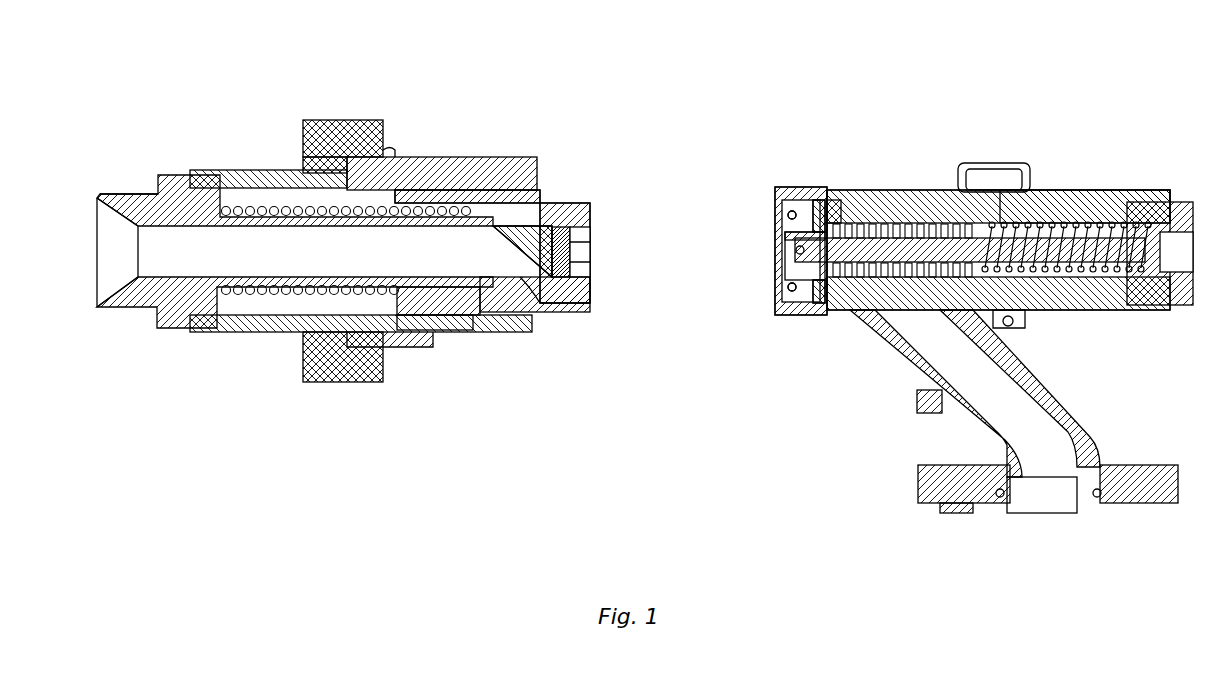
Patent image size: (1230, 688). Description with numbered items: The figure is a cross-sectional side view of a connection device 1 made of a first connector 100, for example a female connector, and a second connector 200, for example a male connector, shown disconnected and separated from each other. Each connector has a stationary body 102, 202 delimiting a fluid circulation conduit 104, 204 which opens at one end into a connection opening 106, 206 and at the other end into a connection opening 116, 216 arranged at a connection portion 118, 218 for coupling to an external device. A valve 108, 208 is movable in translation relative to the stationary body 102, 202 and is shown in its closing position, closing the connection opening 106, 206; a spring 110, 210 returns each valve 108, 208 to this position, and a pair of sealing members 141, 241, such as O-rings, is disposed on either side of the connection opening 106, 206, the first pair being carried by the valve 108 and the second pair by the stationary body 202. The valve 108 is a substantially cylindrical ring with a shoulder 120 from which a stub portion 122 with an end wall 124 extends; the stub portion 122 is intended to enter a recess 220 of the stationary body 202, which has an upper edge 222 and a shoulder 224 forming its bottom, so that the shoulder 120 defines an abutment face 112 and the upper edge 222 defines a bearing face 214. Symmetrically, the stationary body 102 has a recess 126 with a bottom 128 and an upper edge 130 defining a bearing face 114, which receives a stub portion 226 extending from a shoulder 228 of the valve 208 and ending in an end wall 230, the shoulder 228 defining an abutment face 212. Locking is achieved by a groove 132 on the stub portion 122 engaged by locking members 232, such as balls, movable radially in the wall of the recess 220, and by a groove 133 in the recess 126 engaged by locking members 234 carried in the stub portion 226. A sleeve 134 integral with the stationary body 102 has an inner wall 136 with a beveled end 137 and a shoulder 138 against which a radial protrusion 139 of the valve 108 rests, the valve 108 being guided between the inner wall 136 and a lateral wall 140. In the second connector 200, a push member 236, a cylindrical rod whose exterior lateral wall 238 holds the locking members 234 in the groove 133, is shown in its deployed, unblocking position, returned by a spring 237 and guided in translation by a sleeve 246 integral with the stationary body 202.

The connection device 1 is at (880, 55).
The first connector 100 is at (374, 236).
The stationary body 102 is at (206, 332).
The fluid circulation conduit 104 is at (147, 312).
The connection opening 106 is at (482, 330).
The valve 108 is at (483, 158).
The spring 110 is at (228, 174).
The abutment face 112 is at (540, 193).
The bearing face 114 is at (586, 228).
The connection opening 116 is at (115, 243).
The connection portion 118 is at (118, 192).
The shoulder 120 is at (540, 193).
The stub portion 122 is at (568, 305).
The end wall 124 is at (585, 292).
The recess 126 is at (574, 255).
The bottom 128 is at (572, 240).
The upper edge 130 is at (586, 228).
The groove 132 is at (545, 312).
The groove 133 is at (575, 268).
The sleeve 134 is at (415, 160).
The inner wall 136 is at (330, 155).
The beveled end 137 is at (537, 205).
The shoulder 138 is at (420, 332).
The radial protrusion 139 is at (358, 402).
The lateral wall 140 is at (252, 207).
The sealing members 141 is at (580, 205).
The second connector 200 is at (932, 332).
The stationary body 202 is at (972, 393).
The fluid circulation conduit 204 is at (968, 432).
The connection opening 206 is at (900, 380).
The valve 208 is at (895, 200).
The spring 210 is at (1100, 220).
The abutment face 212 is at (822, 305).
The bearing face 214 is at (778, 195).
The connection opening 216 is at (1045, 512).
The connection portion 218 is at (1140, 503).
The recess 220 is at (800, 200).
The upper edge 222 is at (778, 195).
The shoulder 224 is at (830, 198).
The stub portion 226 is at (806, 303).
The shoulder 228 is at (822, 305).
The end wall 230 is at (787, 265).
The locking members 232 is at (778, 305).
The locking members 234 is at (788, 238).
The push member 236 is at (950, 222).
The spring 237 is at (1068, 300).
The exterior lateral wall 238 is at (860, 238).
The sealing members 241 is at (850, 222).
The sleeve 246 is at (1115, 300).